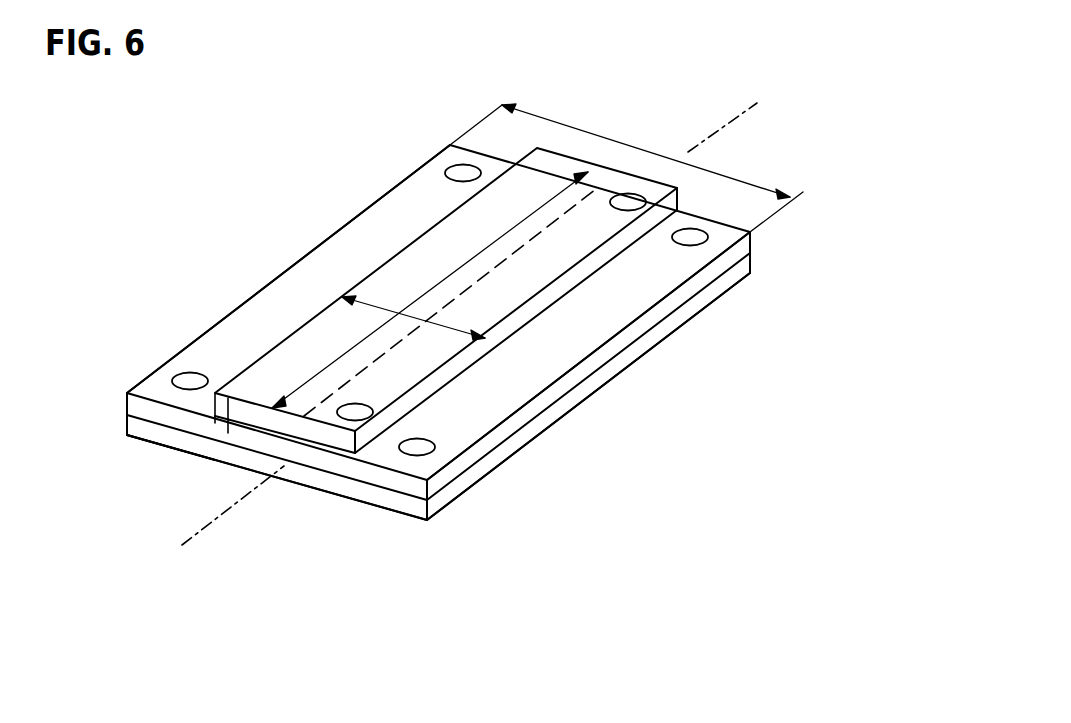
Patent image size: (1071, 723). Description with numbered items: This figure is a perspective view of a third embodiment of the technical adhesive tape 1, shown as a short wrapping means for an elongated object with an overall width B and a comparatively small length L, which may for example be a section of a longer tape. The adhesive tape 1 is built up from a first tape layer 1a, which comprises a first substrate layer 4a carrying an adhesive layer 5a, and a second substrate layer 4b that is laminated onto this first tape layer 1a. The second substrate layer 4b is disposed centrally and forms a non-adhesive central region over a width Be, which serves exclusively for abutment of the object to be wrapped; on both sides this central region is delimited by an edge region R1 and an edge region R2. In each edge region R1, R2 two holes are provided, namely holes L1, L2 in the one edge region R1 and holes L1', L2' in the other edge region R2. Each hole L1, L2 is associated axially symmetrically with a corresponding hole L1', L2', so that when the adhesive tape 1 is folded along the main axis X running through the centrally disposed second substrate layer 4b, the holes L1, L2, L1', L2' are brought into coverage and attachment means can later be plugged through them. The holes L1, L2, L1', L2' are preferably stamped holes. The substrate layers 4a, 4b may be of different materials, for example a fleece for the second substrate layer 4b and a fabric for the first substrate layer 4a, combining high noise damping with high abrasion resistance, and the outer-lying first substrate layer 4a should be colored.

The adhesive tape 1 is at (226, 428).
The first tape layer 1a is at (165, 413).
The first substrate layer 4a is at (290, 478).
The second substrate layer 4b is at (602, 178).
The adhesive layer 5a is at (757, 236).
The hole L1 is at (155, 347).
The hole L2 is at (435, 133).
The hole L1' is at (500, 485).
The hole L2' is at (740, 185).
The edge region R1 is at (424, 202).
The edge region R2 is at (626, 282).
The width B is at (553, 124).
The width of central non-adhesive region Be is at (380, 296).
The length L is at (350, 346).
The main axis X is at (180, 541).